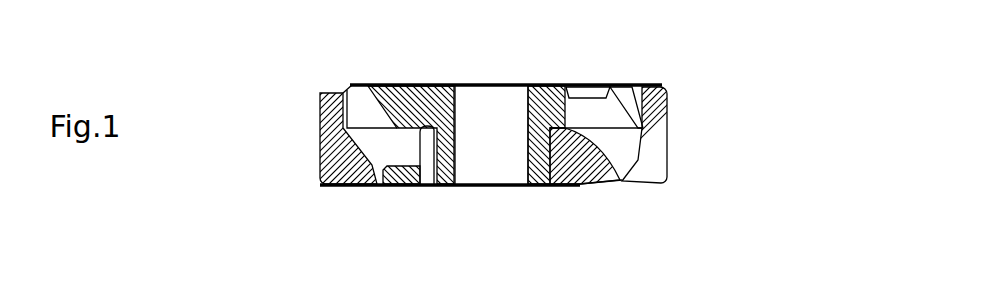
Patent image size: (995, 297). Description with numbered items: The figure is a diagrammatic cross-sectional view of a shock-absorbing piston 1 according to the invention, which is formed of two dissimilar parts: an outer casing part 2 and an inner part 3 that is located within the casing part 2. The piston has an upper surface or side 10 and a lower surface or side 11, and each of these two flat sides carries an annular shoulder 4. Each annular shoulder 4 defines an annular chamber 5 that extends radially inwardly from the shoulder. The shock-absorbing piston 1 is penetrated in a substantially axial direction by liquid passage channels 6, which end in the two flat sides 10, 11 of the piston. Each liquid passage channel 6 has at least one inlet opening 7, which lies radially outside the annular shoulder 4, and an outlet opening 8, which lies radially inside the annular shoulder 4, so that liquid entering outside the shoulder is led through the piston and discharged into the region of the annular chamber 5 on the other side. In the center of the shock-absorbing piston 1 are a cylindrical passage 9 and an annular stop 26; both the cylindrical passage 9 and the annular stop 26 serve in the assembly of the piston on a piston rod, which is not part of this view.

The shock-absorbing piston 1 is at (614, 51).
The outer casing part 2 is at (332, 148).
The inner part 3 is at (387, 84).
The annular shoulder 4 is at (350, 82).
The annular chamber 5 is at (588, 85).
The liquid passage channel 6 is at (605, 150).
The inlet opening 7 is at (322, 93).
The outlet opening 8 is at (572, 88).
The cylindrical passage 9 is at (490, 128).
The upper surface or side 10 is at (268, 45).
The lower surface or side 11 is at (256, 220).
The annular stop 26 is at (433, 84).